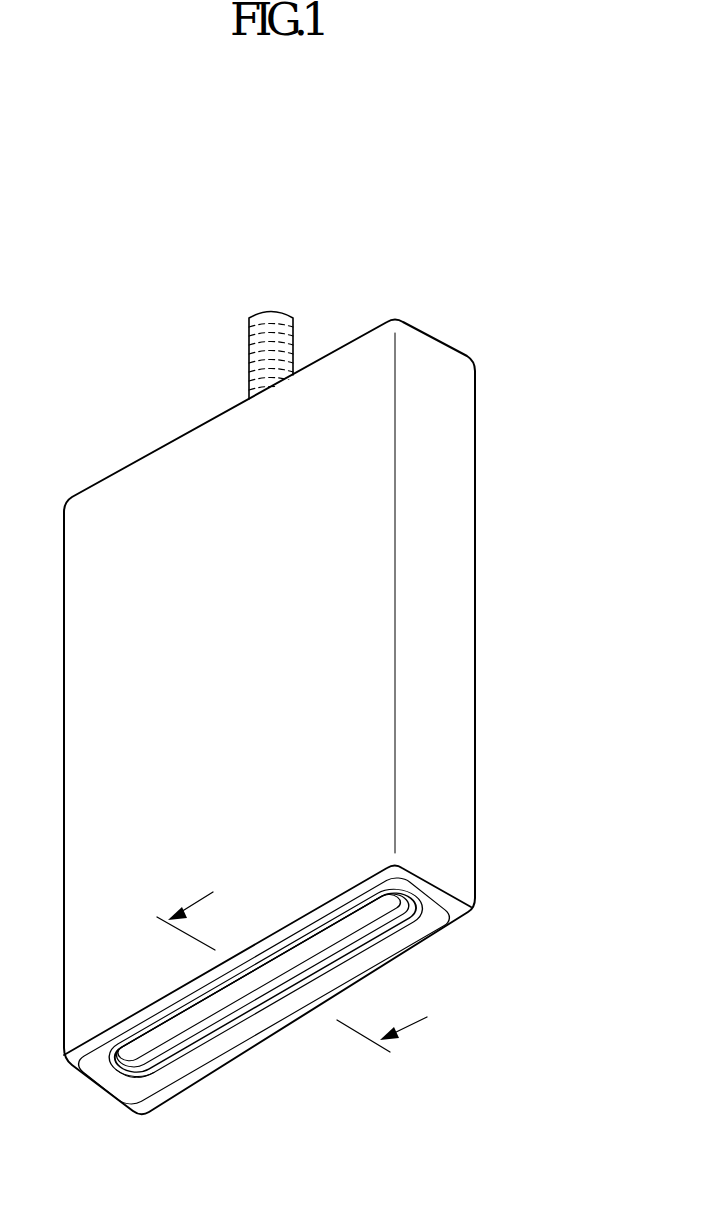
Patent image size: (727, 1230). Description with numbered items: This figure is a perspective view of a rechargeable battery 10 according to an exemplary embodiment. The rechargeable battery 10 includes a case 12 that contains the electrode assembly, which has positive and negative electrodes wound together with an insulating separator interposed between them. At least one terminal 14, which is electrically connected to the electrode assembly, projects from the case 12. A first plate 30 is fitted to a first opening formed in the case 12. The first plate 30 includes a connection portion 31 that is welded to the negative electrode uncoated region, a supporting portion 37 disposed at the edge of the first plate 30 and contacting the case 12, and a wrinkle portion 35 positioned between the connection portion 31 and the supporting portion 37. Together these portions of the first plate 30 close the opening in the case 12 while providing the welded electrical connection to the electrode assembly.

The rechargeable battery 10 is at (457, 296).
The case 12 is at (450, 543).
The terminal 14 is at (249, 351).
The first plate 30 is at (187, 1096).
The connection portion 31 is at (264, 990).
The wrinkle portion 35 is at (265, 983).
The supporting portion 37 is at (135, 1071).